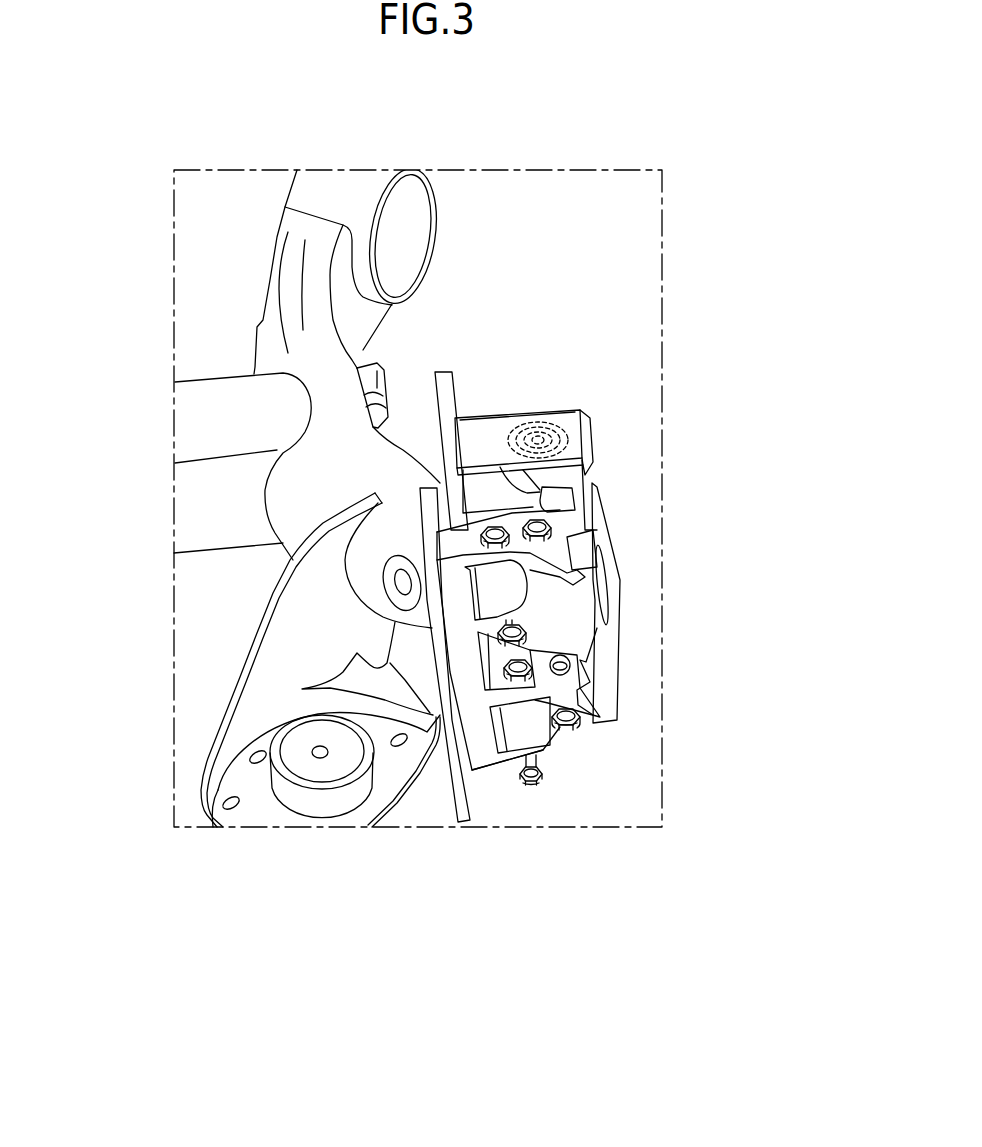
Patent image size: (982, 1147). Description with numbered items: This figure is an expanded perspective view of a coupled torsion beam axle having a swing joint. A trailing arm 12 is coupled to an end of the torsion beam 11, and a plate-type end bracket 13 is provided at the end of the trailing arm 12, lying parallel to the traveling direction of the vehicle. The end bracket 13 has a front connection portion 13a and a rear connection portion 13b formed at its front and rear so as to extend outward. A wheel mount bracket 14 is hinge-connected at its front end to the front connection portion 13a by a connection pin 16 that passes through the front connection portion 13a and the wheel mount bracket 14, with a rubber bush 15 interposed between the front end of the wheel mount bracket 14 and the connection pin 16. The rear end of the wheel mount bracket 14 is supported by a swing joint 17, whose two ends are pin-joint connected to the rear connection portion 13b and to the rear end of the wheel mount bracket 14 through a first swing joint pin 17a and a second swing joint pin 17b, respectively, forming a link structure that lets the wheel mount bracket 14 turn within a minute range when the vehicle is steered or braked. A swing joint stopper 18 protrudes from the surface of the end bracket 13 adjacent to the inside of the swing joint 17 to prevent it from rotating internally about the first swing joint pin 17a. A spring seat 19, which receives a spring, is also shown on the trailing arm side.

The torsion beam 11 is at (205, 505).
The trailing arm 12 is at (365, 467).
The end bracket 13 is at (442, 398).
The front connection portion 13a is at (497, 425).
The rear connection portion 13b is at (480, 753).
The wheel mount bracket 14 is at (603, 528).
The rubber bush 15 is at (563, 442).
The connection pin 16 is at (542, 435).
The swing joint 17 is at (523, 585).
The first swing joint pin 17a is at (536, 785).
The second swing joint pin 17b is at (577, 730).
The swing joint stopper 18 is at (560, 668).
The spring seat 19 is at (253, 790).